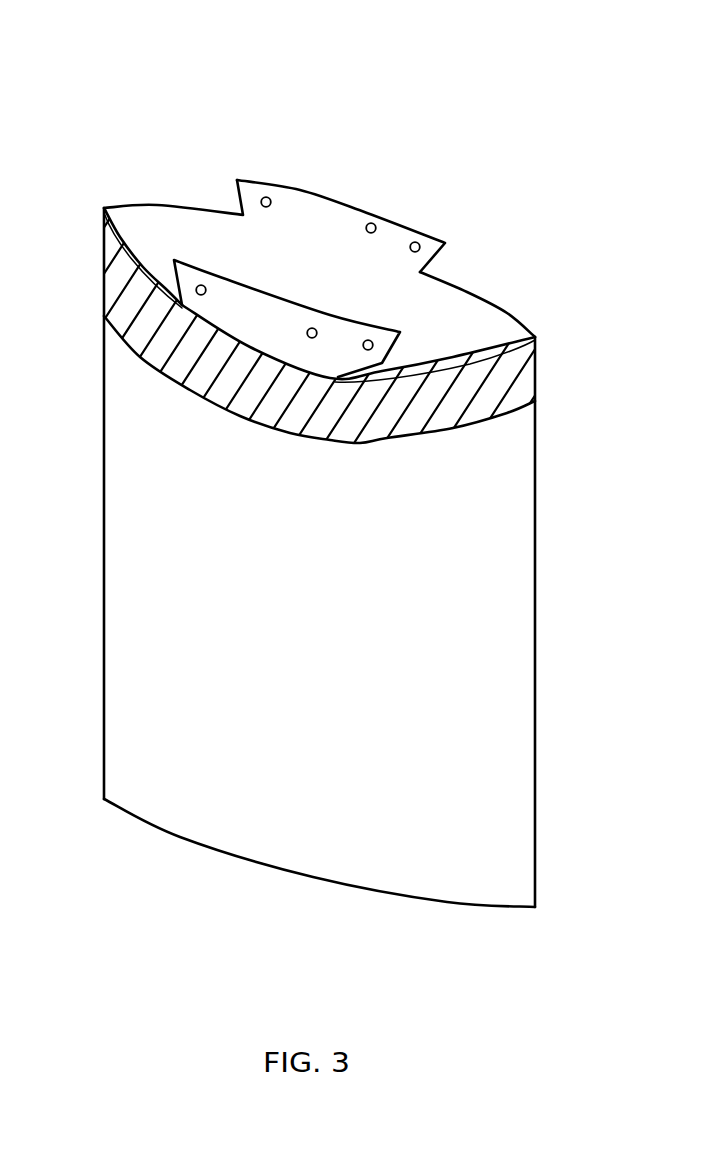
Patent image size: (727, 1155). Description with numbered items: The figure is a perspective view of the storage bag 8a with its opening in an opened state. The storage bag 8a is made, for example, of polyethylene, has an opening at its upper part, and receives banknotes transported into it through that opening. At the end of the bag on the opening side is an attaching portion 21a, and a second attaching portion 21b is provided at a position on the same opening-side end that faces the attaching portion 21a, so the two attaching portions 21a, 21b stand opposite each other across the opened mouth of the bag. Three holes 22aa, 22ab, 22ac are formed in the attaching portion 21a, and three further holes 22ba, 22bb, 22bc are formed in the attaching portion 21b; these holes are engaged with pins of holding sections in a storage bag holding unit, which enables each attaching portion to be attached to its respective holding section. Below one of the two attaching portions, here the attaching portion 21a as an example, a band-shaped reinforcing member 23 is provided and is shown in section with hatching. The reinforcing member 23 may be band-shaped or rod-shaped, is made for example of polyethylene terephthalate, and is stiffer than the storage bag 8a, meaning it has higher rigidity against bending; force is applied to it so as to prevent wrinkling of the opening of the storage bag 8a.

The storage bag 8a is at (397, 56).
The attaching portion 21a is at (190, 260).
The attaching portion 21b is at (332, 198).
The hole 22aa is at (198, 293).
The hole 22ab is at (310, 336).
The hole 22ac is at (366, 348).
The hole 22ba is at (266, 197).
The hole 22bb is at (372, 223).
The hole 22bc is at (418, 243).
The reinforcing member 23 is at (528, 396).